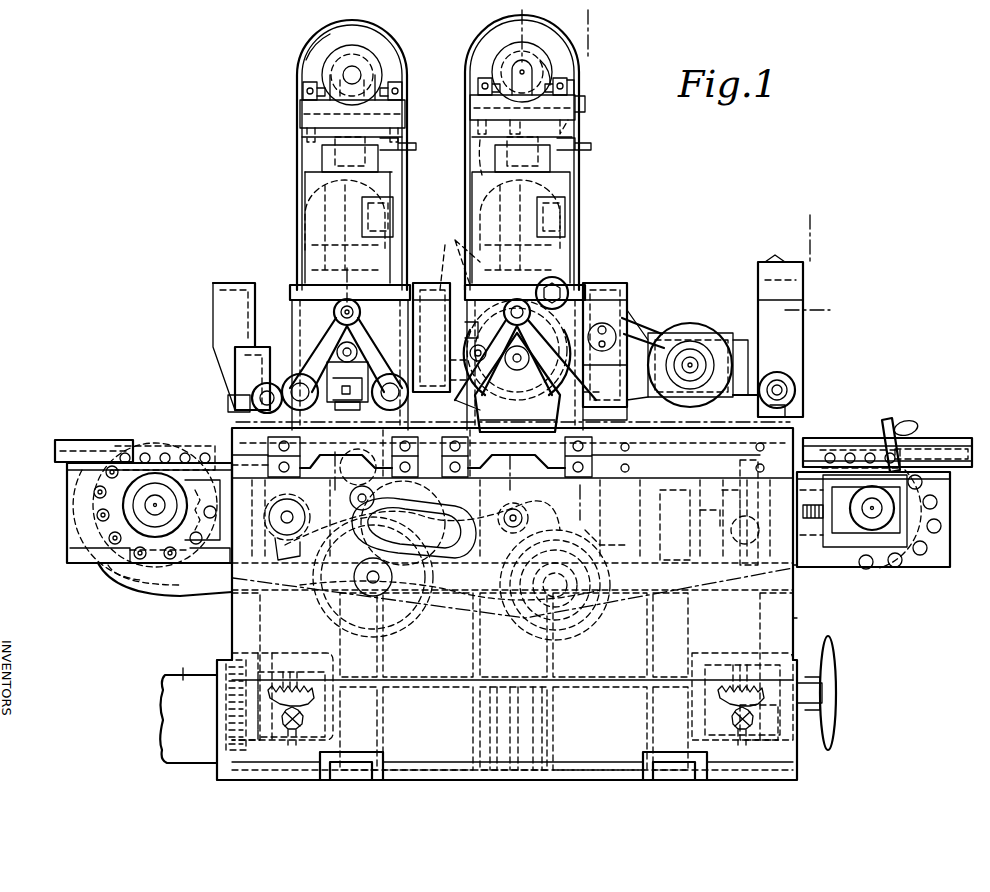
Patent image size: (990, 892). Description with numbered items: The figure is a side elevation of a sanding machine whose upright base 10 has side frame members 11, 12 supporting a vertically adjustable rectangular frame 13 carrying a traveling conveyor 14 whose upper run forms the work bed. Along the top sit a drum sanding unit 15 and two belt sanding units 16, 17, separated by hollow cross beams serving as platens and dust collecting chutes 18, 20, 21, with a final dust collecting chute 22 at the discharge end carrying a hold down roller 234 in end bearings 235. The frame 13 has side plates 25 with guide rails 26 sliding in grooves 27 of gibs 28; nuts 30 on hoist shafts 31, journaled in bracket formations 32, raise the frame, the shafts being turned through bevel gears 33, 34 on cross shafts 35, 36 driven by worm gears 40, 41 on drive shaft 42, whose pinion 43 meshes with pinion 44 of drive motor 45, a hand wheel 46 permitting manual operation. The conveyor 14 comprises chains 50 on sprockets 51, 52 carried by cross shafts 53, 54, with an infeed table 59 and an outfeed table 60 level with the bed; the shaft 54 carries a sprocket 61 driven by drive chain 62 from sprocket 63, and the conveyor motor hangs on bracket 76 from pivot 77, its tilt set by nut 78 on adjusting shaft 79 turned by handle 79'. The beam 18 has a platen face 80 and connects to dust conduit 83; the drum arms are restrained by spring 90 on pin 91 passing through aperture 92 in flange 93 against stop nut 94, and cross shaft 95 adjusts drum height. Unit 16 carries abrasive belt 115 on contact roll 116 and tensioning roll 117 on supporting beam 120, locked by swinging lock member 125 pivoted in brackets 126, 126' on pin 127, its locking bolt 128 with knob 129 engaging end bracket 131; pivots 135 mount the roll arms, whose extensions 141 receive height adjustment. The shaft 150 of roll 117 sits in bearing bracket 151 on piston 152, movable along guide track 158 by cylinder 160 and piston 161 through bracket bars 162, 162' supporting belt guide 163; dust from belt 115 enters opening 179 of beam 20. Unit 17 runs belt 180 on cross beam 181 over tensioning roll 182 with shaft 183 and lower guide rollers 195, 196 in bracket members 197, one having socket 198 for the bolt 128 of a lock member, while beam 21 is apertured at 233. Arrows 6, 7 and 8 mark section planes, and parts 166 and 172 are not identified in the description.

The section line 6 is at (577, 19).
The section line 7 is at (509, 30).
The section line 8 is at (362, 287).
The upright base 10 is at (799, 615).
The side frame member 11 is at (805, 244).
The side frame member 12 is at (810, 298).
The rectangular frame 13 is at (872, 519).
The traveling conveyor 14 is at (165, 447).
The drum sanding unit 15 is at (712, 316).
The belt sanding unit 16 is at (580, 166).
The belt sanding unit 17 is at (408, 166).
The combination platen and dust collecting chute 18 is at (800, 288).
The combination platen and dust collecting chute 20 is at (597, 283).
The cross beam platen and dust collector member 21 is at (428, 283).
The final dust collecting chute 22 is at (236, 283).
The side plate 25 is at (941, 564).
The guide rail 26 is at (230, 588).
The rack forming groove 27 is at (780, 567).
The gib or guide bracket member 28 is at (760, 579).
The nut 30 is at (728, 492).
The hoist shaft 31 is at (732, 540).
The bracket formation 32 is at (334, 660).
The bevel gear 33 is at (316, 700).
The bevel gear 34 is at (322, 732).
The cross shaft 35 is at (762, 718).
The cross shaft 36 is at (312, 712).
The worm gear 40 is at (697, 656).
The worm gear 41 is at (306, 664).
The drive shaft 42 is at (440, 690).
The pinion 43 is at (228, 660).
The pinion 44 is at (226, 712).
The drive motor 45 is at (180, 662).
The hand wheel 46 is at (834, 657).
The chain 50 is at (206, 455).
The sprocket 51 is at (872, 547).
The sprocket 52 is at (67, 512).
The cross shaft 53 is at (136, 447).
The cross shaft 54 is at (152, 504).
The infeed table 59 is at (941, 438).
The outfeed table 60 is at (82, 440).
The sprocket 61 is at (105, 531).
The drive chain 62 is at (209, 508).
The sprocket 63 is at (292, 607).
The bracket 76 is at (520, 520).
The pivot 77 is at (500, 518).
The pivotally mounted nut 78 is at (500, 512).
The adjusting shaft 79 is at (613, 523).
The handle 79' is at (900, 433).
The platen forming face 80 is at (795, 410).
The dust collecting conduit 83 is at (776, 262).
The compression spring 90 is at (706, 342).
The upstanding pin 91 is at (690, 325).
The aperture 92 is at (678, 328).
The bottom flange 93 is at (628, 330).
The stop nut 94 is at (611, 318).
The cross shaft 95 is at (792, 384).
The abrasive belt 115 is at (578, 101).
The contact roll 116 is at (519, 350).
The belt tensioning roll 117 is at (488, 38).
The supporting beam 120 is at (478, 147).
The lock member 125 is at (478, 400).
The bearing forming bracket 126 is at (368, 469).
The bearing forming bracket 126' is at (603, 470).
The pivot pin 127 is at (570, 416).
The locking bolt 128 is at (450, 254).
The knob 129 is at (500, 302).
The end bracket 131 is at (525, 376).
The pivot 135 is at (478, 330).
The arm extension 141 is at (562, 272).
The supporting shaft 150 is at (514, 62).
The bearing bracket 151 is at (548, 60).
The piston 152 is at (330, 138).
The guide track 158 is at (545, 126).
The cylinder 160 is at (533, 78).
The piston 161 is at (480, 68).
The bracket forming bar 162 is at (502, 83).
The bracket bar 162' is at (603, 81).
The belt guide member 163 is at (297, 70).
The bracket 166 is at (591, 138).
The bolts 172 is at (606, 432).
The opening 179 is at (603, 380).
The belt 180 is at (300, 152).
The cross beam 181 is at (305, 167).
The belt supporting and tensioning roll 182 is at (320, 50).
The shaft 183 is at (360, 70).
The guide roller 195 is at (442, 350).
The guide roller 196 is at (292, 378).
The bracket member 197 is at (300, 292).
The threaded socket 198 is at (335, 300).
The aperture 233 is at (442, 372).
The hold down roller 234 is at (228, 400).
The end bearing 235 is at (252, 396).